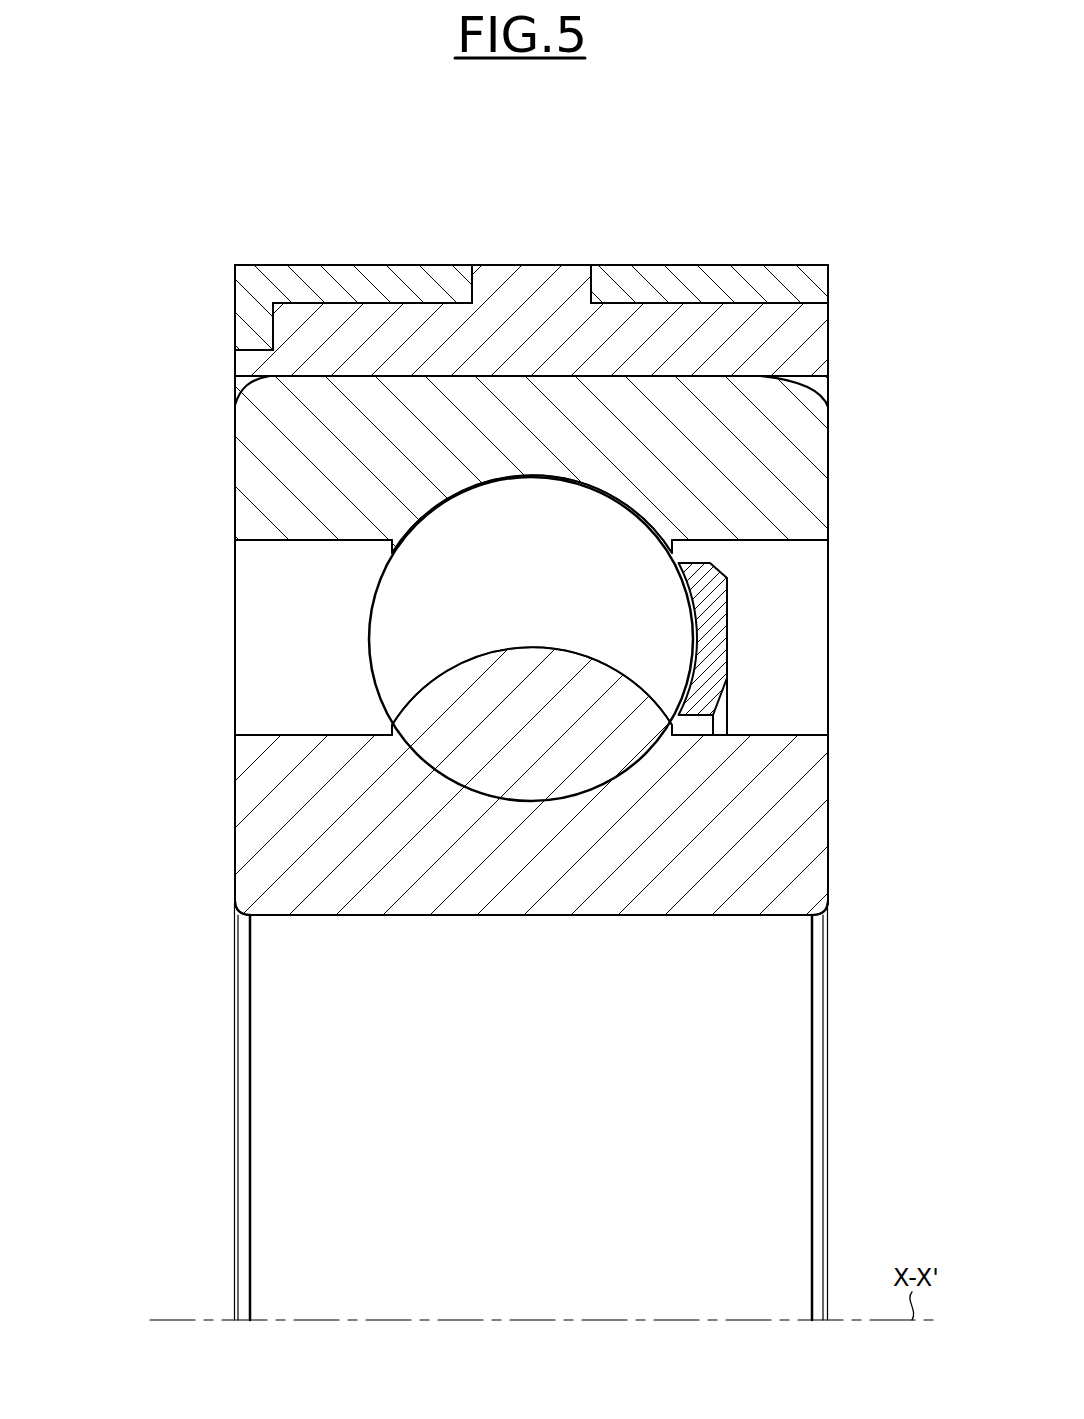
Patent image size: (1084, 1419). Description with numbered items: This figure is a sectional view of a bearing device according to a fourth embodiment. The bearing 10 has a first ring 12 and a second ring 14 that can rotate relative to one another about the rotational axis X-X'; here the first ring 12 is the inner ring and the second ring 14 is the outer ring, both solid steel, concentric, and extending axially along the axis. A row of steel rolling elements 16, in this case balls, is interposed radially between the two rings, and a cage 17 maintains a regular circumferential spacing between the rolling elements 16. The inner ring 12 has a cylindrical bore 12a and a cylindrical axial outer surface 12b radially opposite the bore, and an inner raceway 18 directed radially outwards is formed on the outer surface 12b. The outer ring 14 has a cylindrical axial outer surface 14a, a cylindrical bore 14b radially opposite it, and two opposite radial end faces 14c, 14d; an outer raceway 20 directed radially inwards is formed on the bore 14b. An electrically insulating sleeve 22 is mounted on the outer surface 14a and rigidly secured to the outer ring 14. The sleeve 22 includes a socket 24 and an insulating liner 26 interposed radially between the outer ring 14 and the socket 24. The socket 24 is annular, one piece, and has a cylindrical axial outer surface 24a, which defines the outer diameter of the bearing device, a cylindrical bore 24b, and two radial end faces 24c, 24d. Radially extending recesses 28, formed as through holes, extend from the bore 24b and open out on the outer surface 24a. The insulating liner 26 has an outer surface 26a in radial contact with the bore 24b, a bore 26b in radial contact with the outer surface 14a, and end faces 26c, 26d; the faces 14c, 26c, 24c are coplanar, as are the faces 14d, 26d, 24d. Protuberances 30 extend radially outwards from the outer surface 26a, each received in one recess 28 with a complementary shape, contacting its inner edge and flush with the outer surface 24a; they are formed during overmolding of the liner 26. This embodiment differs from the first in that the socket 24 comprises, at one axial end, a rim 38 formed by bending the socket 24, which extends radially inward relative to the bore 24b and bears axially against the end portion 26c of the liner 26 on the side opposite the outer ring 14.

The bearing 10 is at (122, 462).
The first ring 12 is at (226, 846).
The cylindrical bore 12a is at (327, 916).
The cylindrical axial outer surface 12b is at (287, 735).
The second ring 14 is at (226, 474).
The cylindrical axial outer surface 14a is at (730, 376).
The cylindrical bore 14b is at (274, 540).
The radial end face 14c is at (235, 505).
The radial end face 14d is at (828, 479).
The rolling elements 16 is at (547, 652).
The cage 17 is at (715, 643).
The inner raceway 18 is at (533, 800).
The outer raceway 20 is at (573, 483).
The electrically insulating sleeve 22 is at (174, 361).
The socket 24 is at (288, 256).
The cylindrical axial outer surface 24a is at (737, 264).
The cylindrical bore 24b is at (410, 316).
The radial end face 24c is at (235, 274).
The radial end face 24d is at (828, 285).
The insulating liner 26 is at (226, 379).
The cylindrical axial outer surface 26a is at (660, 303).
The cylindrical bore 26b is at (327, 377).
The radial end face 26c is at (235, 345).
The radial end face 26d is at (828, 343).
The recess 28 is at (591, 289).
The protuberance 30 is at (497, 284).
The rim 38 is at (262, 330).